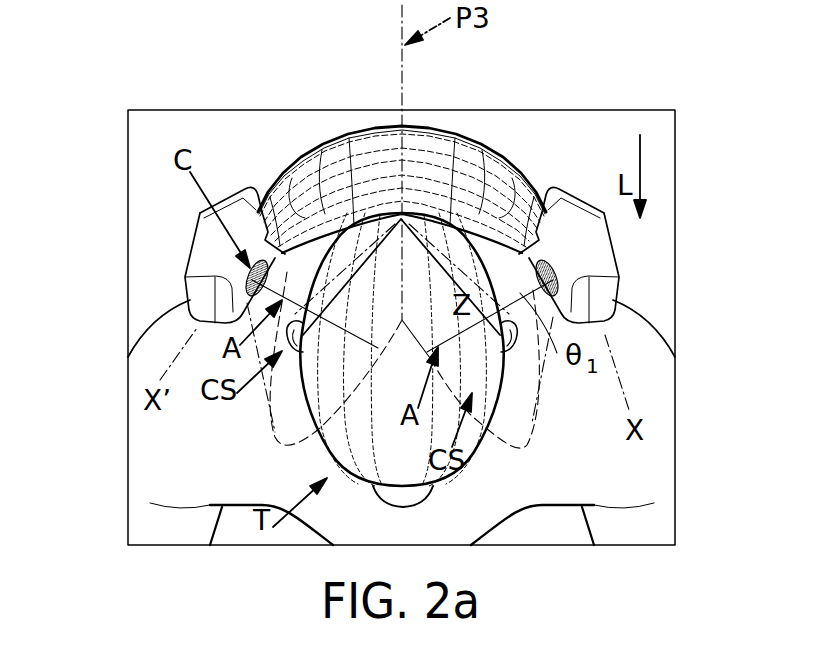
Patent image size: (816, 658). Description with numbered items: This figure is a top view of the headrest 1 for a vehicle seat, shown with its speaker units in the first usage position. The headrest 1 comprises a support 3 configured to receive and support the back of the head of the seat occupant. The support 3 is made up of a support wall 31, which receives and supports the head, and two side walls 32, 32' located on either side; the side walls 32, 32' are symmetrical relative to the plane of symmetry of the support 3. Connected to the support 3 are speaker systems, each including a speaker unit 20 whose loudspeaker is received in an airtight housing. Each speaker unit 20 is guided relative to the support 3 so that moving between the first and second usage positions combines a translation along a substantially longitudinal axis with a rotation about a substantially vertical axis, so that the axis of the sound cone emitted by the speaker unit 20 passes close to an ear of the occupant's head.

The headrest 1 is at (578, 143).
The support 3 is at (448, 130).
The support wall 31 is at (466, 205).
The side wall 32 is at (569, 188).
The side wall 32' is at (235, 188).
The speaker unit 20 is at (173, 245).